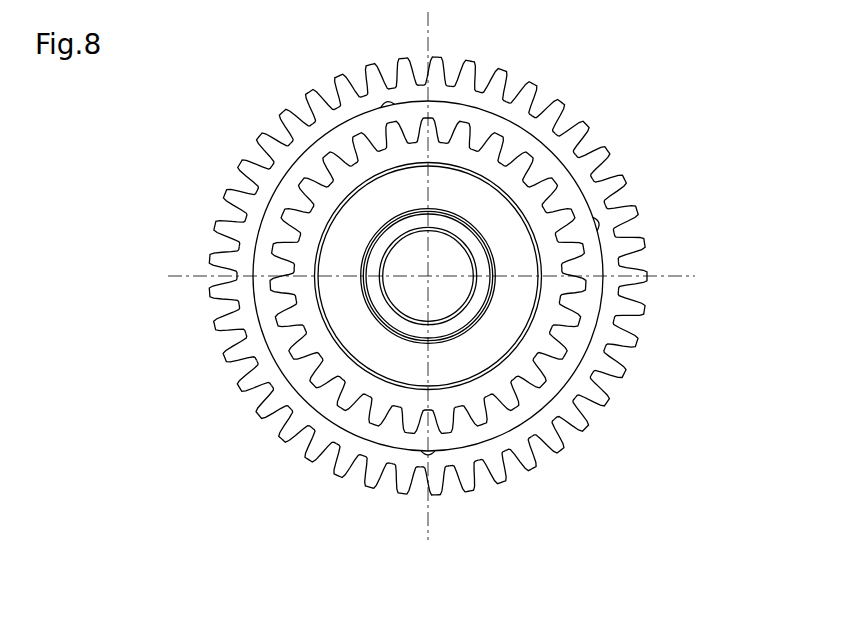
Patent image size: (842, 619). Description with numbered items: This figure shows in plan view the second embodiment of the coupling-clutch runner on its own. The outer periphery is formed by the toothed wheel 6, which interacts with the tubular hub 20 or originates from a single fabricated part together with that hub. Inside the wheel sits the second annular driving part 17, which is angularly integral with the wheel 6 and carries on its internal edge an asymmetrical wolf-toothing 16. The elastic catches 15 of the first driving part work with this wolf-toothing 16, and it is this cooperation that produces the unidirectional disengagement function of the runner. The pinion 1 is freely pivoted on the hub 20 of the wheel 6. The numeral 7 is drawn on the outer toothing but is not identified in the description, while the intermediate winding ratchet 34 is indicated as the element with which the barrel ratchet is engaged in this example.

The pinion 1 is at (575, 222).
The toothed wheel 6 is at (568, 158).
The external toothing 7 is at (267, 140).
The elastic catches 15 is at (448, 133).
The asymmetrical wolf-toothing 16 is at (540, 372).
The second annular driving part 17 is at (583, 323).
The tubular hub 20 is at (402, 228).
The intermediate winding ratchet 34 is at (710, 105).